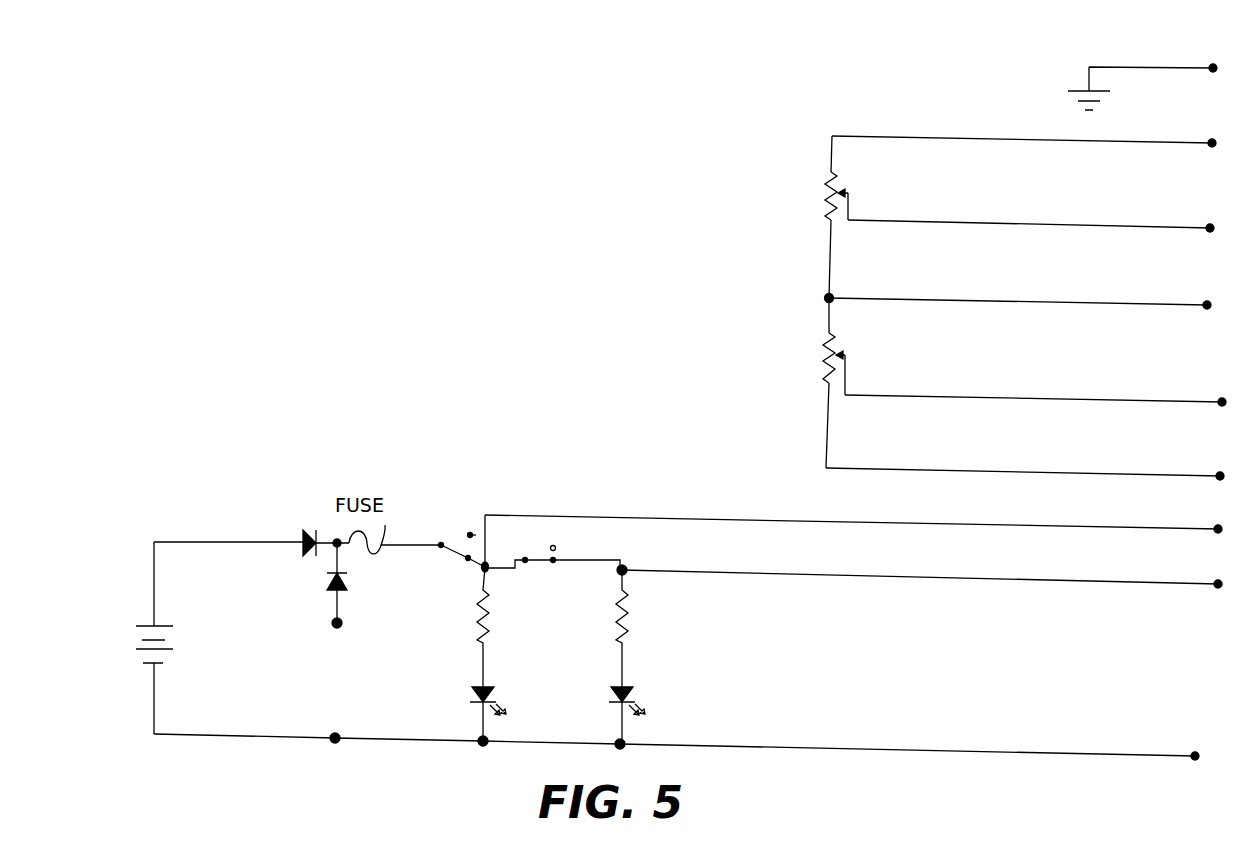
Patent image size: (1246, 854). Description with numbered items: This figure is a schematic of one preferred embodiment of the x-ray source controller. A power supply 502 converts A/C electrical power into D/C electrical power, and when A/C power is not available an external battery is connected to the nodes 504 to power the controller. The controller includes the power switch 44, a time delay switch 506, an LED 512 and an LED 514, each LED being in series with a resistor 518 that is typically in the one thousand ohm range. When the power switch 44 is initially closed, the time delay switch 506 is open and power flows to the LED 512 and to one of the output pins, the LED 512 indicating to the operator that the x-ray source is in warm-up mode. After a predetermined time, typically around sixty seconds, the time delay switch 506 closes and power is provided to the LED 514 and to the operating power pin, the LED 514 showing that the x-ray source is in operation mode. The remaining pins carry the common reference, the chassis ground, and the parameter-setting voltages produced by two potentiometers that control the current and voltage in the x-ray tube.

The power switch 44 is at (444, 548).
The power supply 502 is at (160, 651).
The nodes 504 is at (338, 627).
The time delay switch 506 is at (533, 555).
The LED 512 is at (493, 690).
The LED 514 is at (630, 688).
The resistor 518 is at (487, 635).